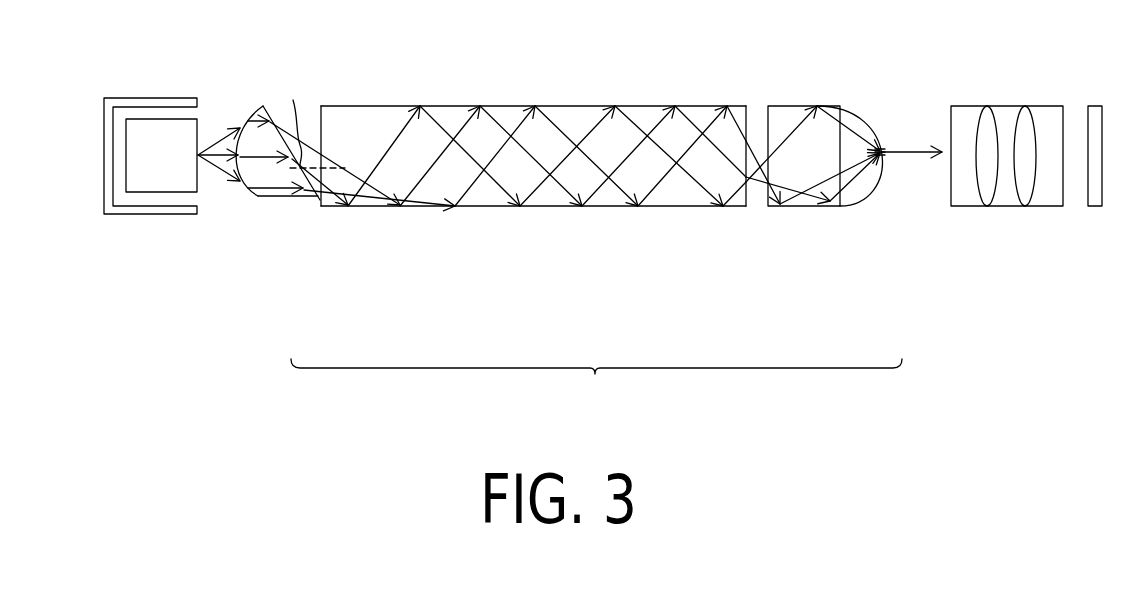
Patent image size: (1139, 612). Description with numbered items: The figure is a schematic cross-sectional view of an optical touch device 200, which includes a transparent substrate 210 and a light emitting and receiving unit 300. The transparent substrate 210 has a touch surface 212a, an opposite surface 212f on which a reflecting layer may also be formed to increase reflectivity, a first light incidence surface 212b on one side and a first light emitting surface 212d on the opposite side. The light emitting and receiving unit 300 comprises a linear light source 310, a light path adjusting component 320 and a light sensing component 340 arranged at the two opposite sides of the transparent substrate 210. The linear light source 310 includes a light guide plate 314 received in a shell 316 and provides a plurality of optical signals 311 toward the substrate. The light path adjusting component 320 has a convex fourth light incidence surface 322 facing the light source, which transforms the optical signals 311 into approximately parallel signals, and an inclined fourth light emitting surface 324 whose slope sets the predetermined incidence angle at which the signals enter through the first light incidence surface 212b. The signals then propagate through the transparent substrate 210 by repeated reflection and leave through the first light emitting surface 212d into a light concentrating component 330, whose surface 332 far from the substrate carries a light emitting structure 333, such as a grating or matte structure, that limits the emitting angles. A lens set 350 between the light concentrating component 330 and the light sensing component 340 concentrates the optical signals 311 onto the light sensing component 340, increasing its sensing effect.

The optical touch device 200 is at (1037, 417).
The transparent substrate 210 is at (520, 105).
The touch surface 212a is at (632, 104).
The first light incidence surface 212b is at (320, 112).
The first light emitting surface 212d is at (750, 112).
The surface opposite to the touch surface 212f is at (512, 209).
The light emitting and receiving unit 300 is at (596, 387).
The linear light source 310 is at (150, 240).
The optical signals 311 is at (204, 150).
The light guide plate 314 is at (175, 128).
The shell 316 is at (123, 103).
The light path adjusting component 320 is at (287, 197).
The fourth light incidence surface 322 is at (252, 199).
The fourth light emitting surface 324 is at (320, 198).
The light concentrating component 330 is at (800, 208).
The surface of the light concentrating component 332 is at (866, 112).
The light emitting structure 333 is at (883, 146).
The light sensing component 340 is at (1088, 208).
The lens set 350 is at (977, 208).